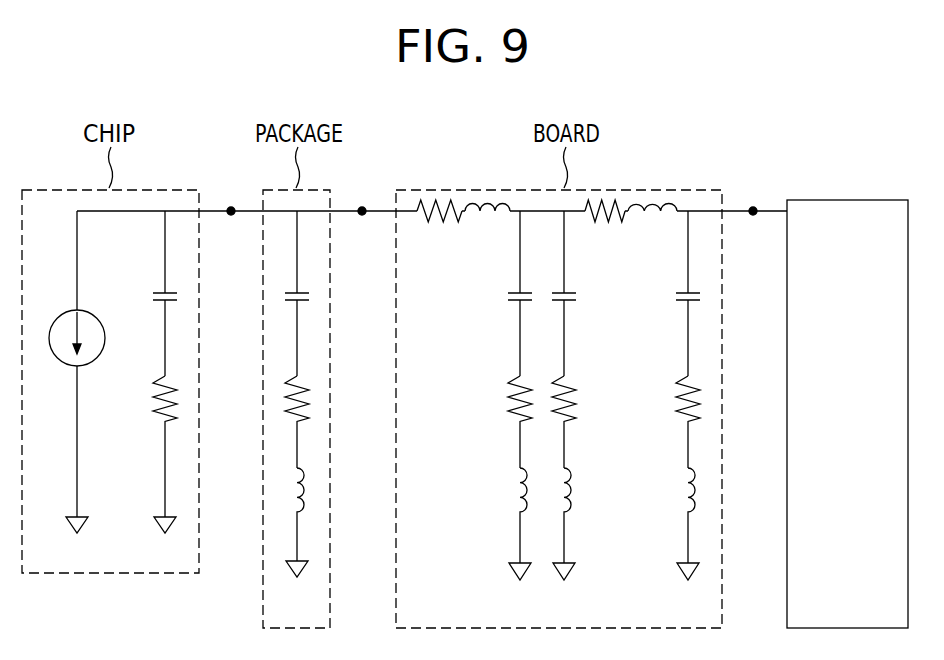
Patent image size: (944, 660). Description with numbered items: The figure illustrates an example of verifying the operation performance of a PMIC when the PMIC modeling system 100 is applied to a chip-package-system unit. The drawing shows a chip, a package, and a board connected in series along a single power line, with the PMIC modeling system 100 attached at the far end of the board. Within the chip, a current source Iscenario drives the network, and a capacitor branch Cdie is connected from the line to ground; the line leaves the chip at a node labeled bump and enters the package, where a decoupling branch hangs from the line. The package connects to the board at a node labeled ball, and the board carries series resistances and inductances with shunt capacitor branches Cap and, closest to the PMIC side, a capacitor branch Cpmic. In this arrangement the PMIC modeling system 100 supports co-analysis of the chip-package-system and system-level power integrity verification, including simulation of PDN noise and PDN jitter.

The PMIC modeling system 100 is at (868, 349).
The bump node bump is at (230, 225).
The ball node ball is at (362, 225).
The scenario current source Iscenario is at (77, 387).
The die capacitor Cdie is at (164, 387).
The board capacitors Cap is at (542, 409).
The PMIC capacitor Cpmic is at (660, 395).